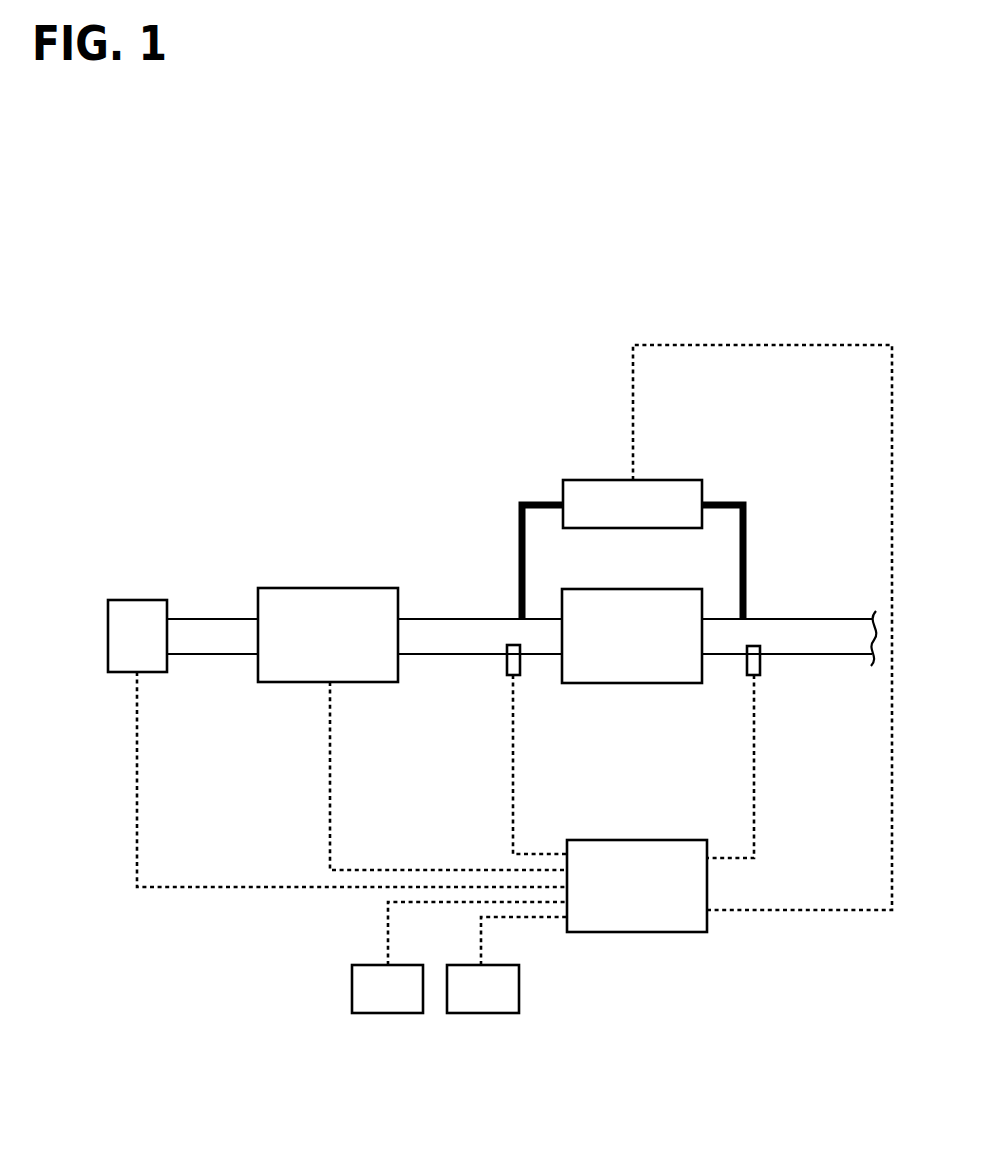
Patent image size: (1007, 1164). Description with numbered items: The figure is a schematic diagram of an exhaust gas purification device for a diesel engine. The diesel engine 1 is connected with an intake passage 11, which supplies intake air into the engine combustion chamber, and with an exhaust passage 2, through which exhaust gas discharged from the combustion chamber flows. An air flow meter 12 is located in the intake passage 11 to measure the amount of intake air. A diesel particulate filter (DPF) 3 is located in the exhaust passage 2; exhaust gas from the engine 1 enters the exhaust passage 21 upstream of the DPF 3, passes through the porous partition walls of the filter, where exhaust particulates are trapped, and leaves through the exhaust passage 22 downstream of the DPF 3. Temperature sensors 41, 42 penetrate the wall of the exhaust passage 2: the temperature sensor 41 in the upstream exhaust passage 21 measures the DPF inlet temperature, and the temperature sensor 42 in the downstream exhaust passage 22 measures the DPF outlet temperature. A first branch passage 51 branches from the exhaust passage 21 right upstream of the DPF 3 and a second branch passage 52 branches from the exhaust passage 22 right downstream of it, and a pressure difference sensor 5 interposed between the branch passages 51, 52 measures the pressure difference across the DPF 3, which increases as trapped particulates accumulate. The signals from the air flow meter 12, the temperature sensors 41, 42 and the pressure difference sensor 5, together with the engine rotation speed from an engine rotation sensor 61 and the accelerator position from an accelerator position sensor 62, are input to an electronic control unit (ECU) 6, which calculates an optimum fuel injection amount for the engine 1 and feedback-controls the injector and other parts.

The diesel engine 1 is at (323, 588).
The intake passage 11 is at (208, 619).
The air flow meter 12 is at (137, 600).
The exhaust passage 2 is at (851, 618).
The exhaust passage upstream of the DPF 21 is at (452, 619).
The exhaust passage downstream of the DPF 22 is at (795, 619).
The diesel particulate filter (DPF) 3 is at (636, 683).
The temperature sensor 41 is at (507, 667).
The temperature sensor 42 is at (760, 668).
The pressure difference sensor 5 is at (600, 480).
The first branch passage 51 is at (538, 502).
The second branch passage 52 is at (723, 504).
The electronic control unit (ECU) 6 is at (637, 932).
The engine rotation sensor 61 is at (384, 1013).
The accelerator position sensor 62 is at (483, 1013).